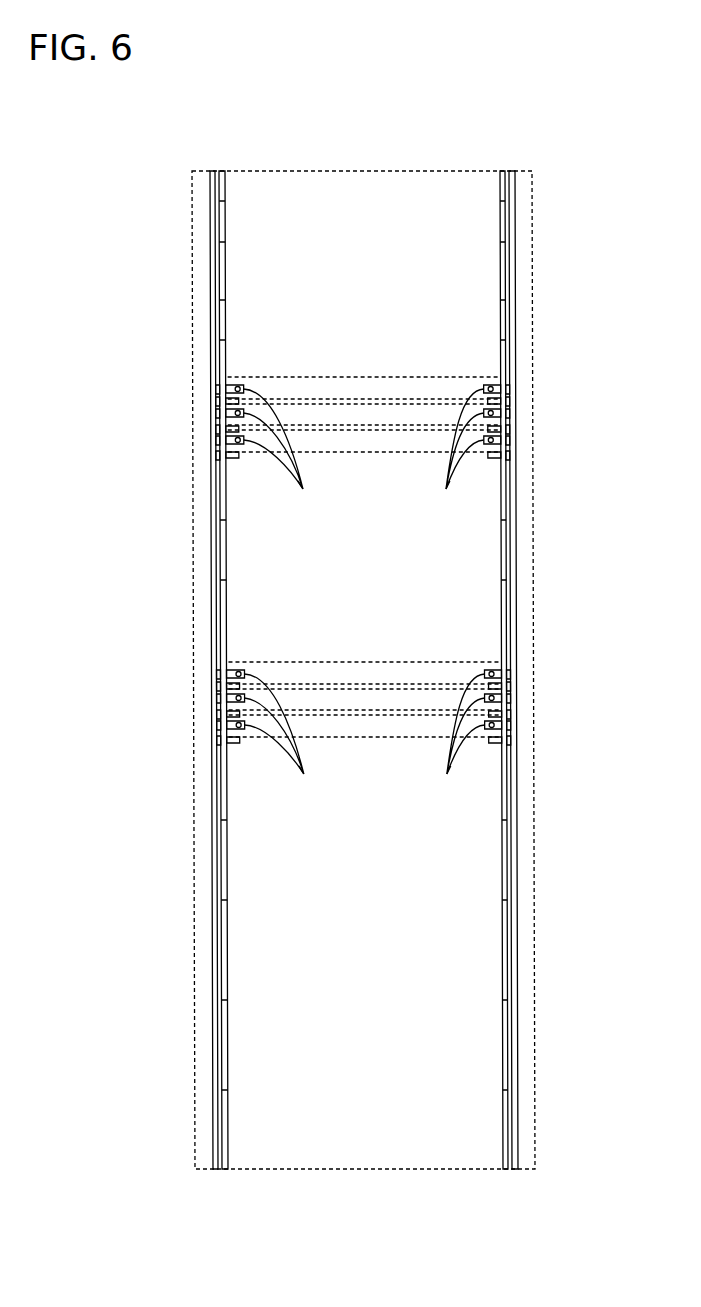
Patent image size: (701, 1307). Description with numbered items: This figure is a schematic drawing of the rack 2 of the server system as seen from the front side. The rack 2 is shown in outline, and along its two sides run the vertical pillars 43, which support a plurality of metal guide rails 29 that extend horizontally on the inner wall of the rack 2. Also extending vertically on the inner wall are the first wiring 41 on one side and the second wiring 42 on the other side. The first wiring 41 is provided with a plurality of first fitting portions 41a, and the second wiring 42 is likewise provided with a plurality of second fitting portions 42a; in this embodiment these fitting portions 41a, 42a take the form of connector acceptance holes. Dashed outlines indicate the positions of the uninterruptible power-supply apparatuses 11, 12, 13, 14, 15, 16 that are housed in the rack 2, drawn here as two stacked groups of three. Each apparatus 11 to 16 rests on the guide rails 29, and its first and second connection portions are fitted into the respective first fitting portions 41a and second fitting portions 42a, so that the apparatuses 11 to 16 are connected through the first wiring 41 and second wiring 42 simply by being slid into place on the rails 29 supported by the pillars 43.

The rack 2 is at (368, 170).
The uninterruptible power-supply apparatus 11 is at (326, 375).
The uninterruptible power-supply apparatus 12 is at (365, 403).
The uninterruptible power-supply apparatus 13 is at (394, 428).
The uninterruptible power-supply apparatus 14 is at (326, 660).
The uninterruptible power-supply apparatus 15 is at (365, 688).
The uninterruptible power-supply apparatus 16 is at (394, 713).
The metal guide rail 29 is at (213, 455).
The first wiring 41 is at (210, 556).
The first fitting portion 41a is at (286, 595).
The second wiring 42 is at (515, 556).
The second fitting portion 42a is at (462, 595).
The pillar 43 is at (228, 979).